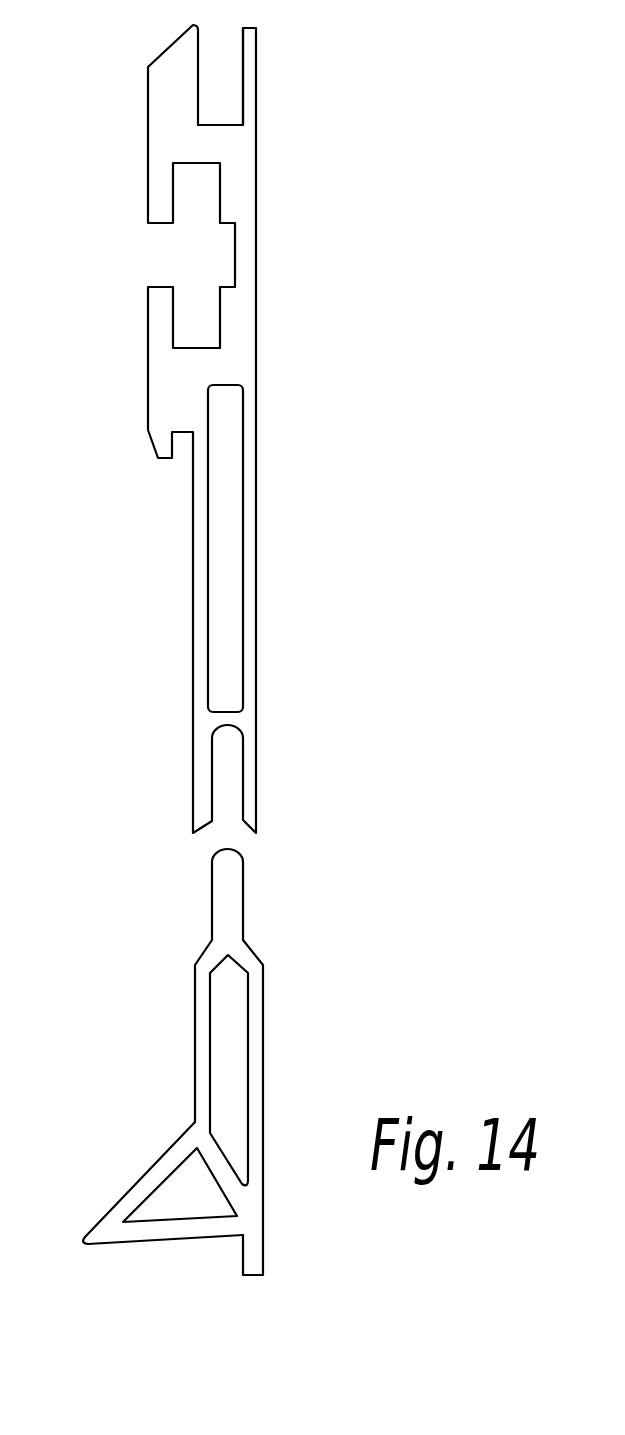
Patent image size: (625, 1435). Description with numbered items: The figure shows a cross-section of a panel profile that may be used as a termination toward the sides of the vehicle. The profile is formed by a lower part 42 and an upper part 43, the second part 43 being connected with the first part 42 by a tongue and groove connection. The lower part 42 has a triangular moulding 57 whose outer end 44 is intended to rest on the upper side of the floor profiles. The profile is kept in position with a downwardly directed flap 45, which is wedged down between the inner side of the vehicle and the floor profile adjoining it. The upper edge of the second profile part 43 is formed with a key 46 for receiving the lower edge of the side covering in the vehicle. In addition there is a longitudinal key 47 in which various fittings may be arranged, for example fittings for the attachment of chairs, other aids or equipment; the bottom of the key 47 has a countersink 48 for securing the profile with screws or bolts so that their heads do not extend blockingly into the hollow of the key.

The lower part 42 is at (280, 1027).
The upper part 43 is at (279, 529).
The outer end 44 is at (87, 1248).
The downwardly directed flap 45 is at (267, 1280).
The key 46 is at (229, 37).
The longitudinal key 47 is at (135, 258).
The countersink 48 is at (222, 263).
The triangular moulding 57 is at (115, 1168).